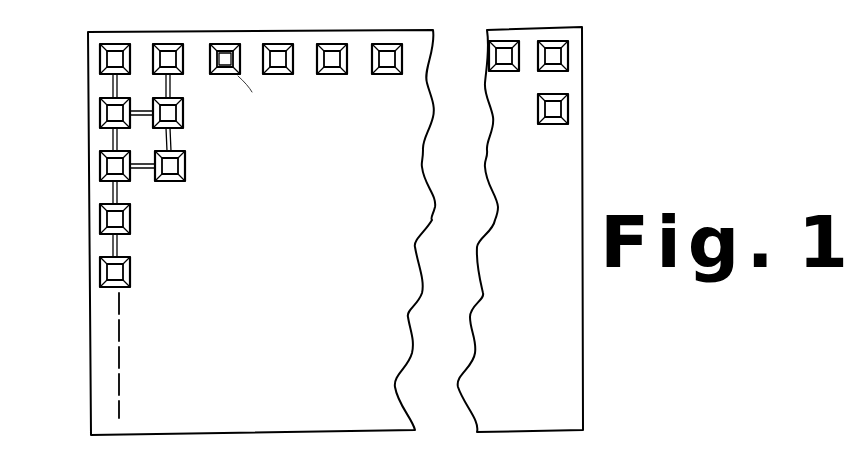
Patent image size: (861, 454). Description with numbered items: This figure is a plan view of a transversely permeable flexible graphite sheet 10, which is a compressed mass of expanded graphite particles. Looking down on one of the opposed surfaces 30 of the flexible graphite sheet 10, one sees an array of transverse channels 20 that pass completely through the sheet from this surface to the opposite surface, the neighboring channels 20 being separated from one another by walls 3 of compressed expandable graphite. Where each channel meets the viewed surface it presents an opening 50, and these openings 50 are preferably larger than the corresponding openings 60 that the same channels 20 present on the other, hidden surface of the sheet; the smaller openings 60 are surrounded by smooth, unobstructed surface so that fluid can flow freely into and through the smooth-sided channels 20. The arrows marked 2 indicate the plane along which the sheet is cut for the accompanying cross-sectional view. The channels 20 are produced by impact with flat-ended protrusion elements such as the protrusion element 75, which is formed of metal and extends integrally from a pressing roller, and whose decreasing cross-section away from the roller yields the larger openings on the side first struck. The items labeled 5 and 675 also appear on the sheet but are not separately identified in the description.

The section line 2- 2 is at (118, 60).
The walls 3 is at (143, 78).
The interconnect traces 5 is at (110, 87).
The flexible graphite sheet 10 is at (600, 167).
The channels 20 is at (222, 40).
The opposed surface 30 is at (540, 357).
The openings 50 is at (242, 68).
The openings 60 is at (219, 63).
The flat-ended protrusion element 75 is at (690, 453).
The element 675 is at (769, 446).